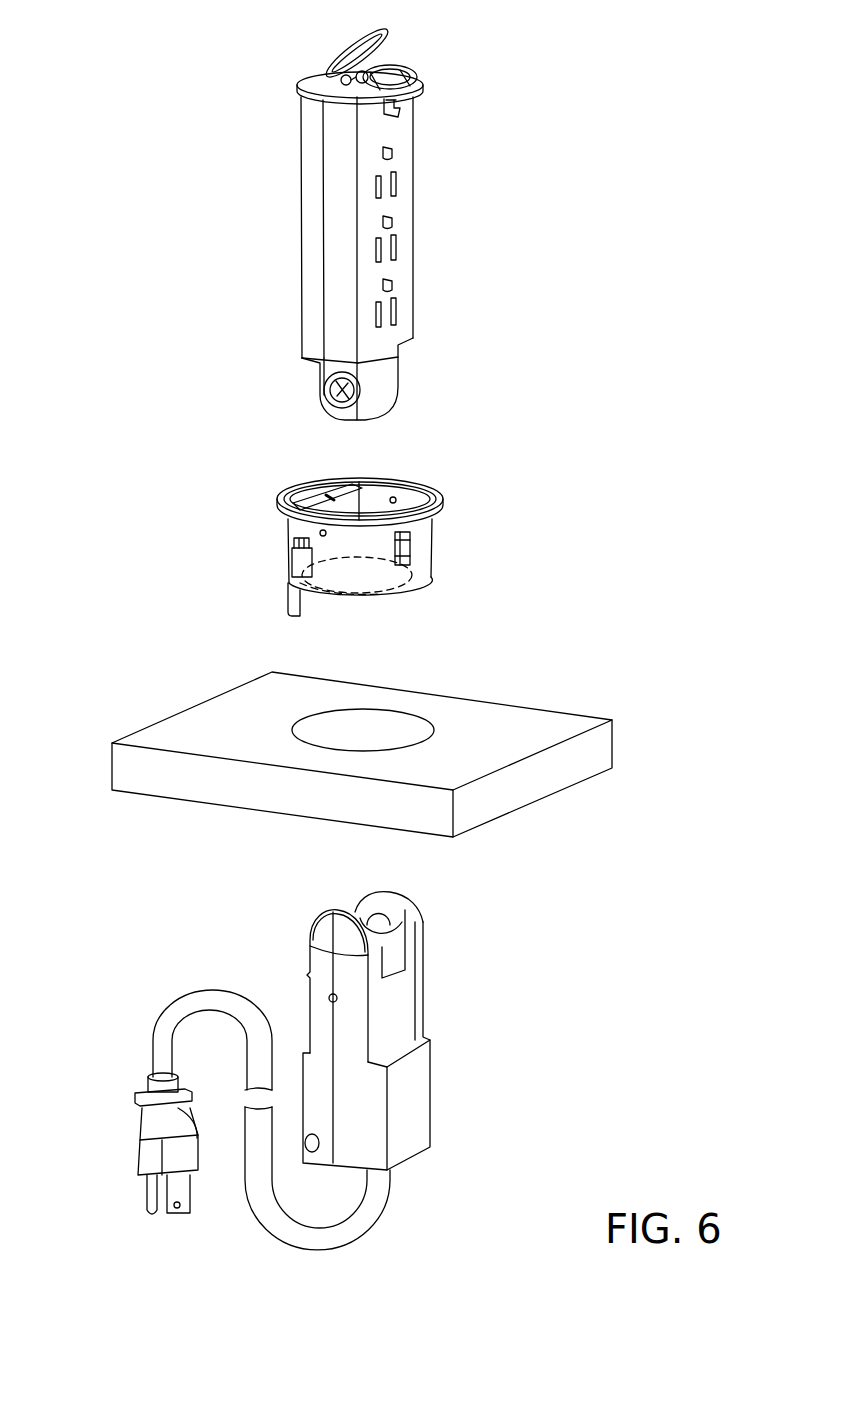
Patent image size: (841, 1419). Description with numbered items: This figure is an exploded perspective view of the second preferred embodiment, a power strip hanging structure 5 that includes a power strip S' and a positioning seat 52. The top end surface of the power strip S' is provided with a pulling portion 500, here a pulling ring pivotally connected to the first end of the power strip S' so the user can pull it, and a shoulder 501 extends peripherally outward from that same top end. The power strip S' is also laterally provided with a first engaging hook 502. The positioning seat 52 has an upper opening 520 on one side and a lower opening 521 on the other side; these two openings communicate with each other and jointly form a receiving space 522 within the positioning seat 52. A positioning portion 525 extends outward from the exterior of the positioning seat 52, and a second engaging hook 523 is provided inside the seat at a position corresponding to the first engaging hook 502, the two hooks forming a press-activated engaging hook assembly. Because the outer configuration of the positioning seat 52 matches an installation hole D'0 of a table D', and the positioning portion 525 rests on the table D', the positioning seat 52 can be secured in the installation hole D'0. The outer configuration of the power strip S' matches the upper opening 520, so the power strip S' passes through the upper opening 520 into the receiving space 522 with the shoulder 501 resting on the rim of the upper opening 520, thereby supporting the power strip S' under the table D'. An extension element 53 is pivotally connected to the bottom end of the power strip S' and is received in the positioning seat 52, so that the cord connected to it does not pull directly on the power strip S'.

The power strip hanging structure 5 is at (643, 153).
The power strip S' is at (383, 258).
The pulling portion 500 is at (388, 32).
The shoulder 501 is at (300, 84).
The first engaging hook 502 is at (405, 104).
The positioning seat 52 is at (440, 497).
The upper opening 520 is at (392, 482).
The lower opening 521 is at (406, 595).
The receiving space 522 is at (333, 495).
The second engaging hook 523 is at (420, 544).
The positioning portion 525 is at (282, 515).
The table D' is at (362, 746).
The installation hole D'0 is at (408, 706).
The extension element 53 is at (410, 1000).